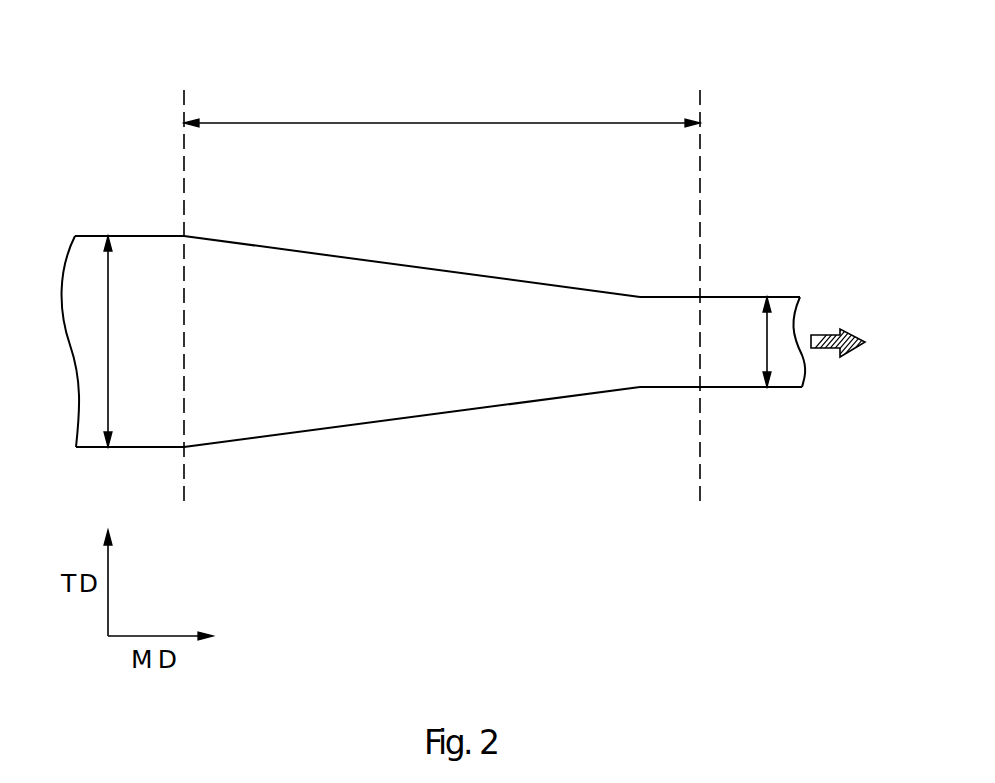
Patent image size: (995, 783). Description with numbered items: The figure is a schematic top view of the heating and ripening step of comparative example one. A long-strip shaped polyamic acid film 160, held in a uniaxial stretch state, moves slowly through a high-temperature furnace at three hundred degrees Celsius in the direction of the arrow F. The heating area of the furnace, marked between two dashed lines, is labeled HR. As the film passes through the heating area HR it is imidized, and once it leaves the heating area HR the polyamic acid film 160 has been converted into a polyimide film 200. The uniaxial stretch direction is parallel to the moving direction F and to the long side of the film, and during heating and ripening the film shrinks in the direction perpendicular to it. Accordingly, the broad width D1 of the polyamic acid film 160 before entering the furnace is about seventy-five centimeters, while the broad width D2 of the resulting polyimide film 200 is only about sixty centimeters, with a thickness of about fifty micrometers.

The polyamic acid film 160 is at (90, 236).
The polyimide film 200 is at (736, 297).
The heating area HR is at (442, 105).
The broad width of the polyamic acid film D1 is at (127, 341).
The broad width of the polyimide film D2 is at (748, 342).
The moving direction arrow F is at (824, 333).